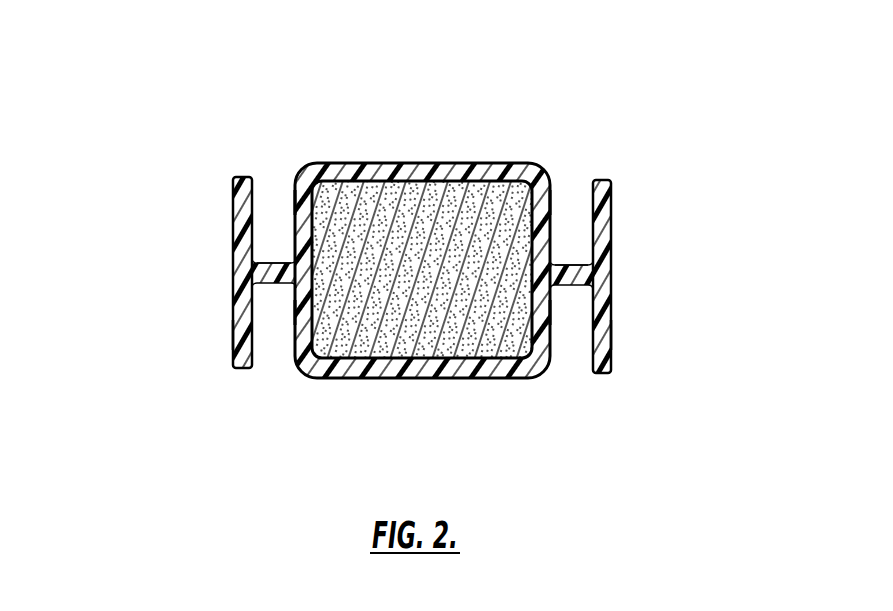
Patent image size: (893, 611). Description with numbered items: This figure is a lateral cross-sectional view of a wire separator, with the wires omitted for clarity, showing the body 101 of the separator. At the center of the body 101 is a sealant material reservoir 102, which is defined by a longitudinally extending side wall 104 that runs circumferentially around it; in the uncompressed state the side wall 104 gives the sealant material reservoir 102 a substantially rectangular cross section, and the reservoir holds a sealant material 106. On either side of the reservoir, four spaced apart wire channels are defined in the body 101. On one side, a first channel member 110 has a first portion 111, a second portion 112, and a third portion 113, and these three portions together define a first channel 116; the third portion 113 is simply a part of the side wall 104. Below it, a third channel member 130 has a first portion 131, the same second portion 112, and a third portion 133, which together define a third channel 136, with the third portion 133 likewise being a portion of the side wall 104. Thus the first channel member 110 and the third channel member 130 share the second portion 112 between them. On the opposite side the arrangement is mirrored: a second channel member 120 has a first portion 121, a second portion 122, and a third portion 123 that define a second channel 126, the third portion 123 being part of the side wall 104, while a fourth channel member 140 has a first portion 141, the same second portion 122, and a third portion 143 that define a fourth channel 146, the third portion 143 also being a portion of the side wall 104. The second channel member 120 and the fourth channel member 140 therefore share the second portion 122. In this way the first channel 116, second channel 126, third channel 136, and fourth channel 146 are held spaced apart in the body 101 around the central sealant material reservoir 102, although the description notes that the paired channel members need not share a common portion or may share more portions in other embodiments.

The body 101 is at (205, 150).
The sealant material reservoir 102 is at (385, 146).
The side wall 104 is at (477, 180).
The sealant material 106 is at (424, 238).
The first channel member 110 is at (167, 248).
The first portion 111 is at (234, 228).
The second portion 112 is at (273, 262).
The third portion 113 is at (297, 196).
The first channel 116 is at (267, 207).
The second channel member 120 is at (637, 242).
The first portion 121 is at (612, 207).
The second portion 122 is at (563, 265).
The third portion 123 is at (549, 204).
The second channel 126 is at (580, 188).
The third channel member 130 is at (227, 297).
The first portion 131 is at (235, 335).
The third portion 133 is at (290, 328).
The third channel 136 is at (267, 327).
The fourth channel member 140 is at (643, 338).
The first portion 141 is at (612, 348).
The third portion 143 is at (555, 328).
The fourth channel 146 is at (573, 330).